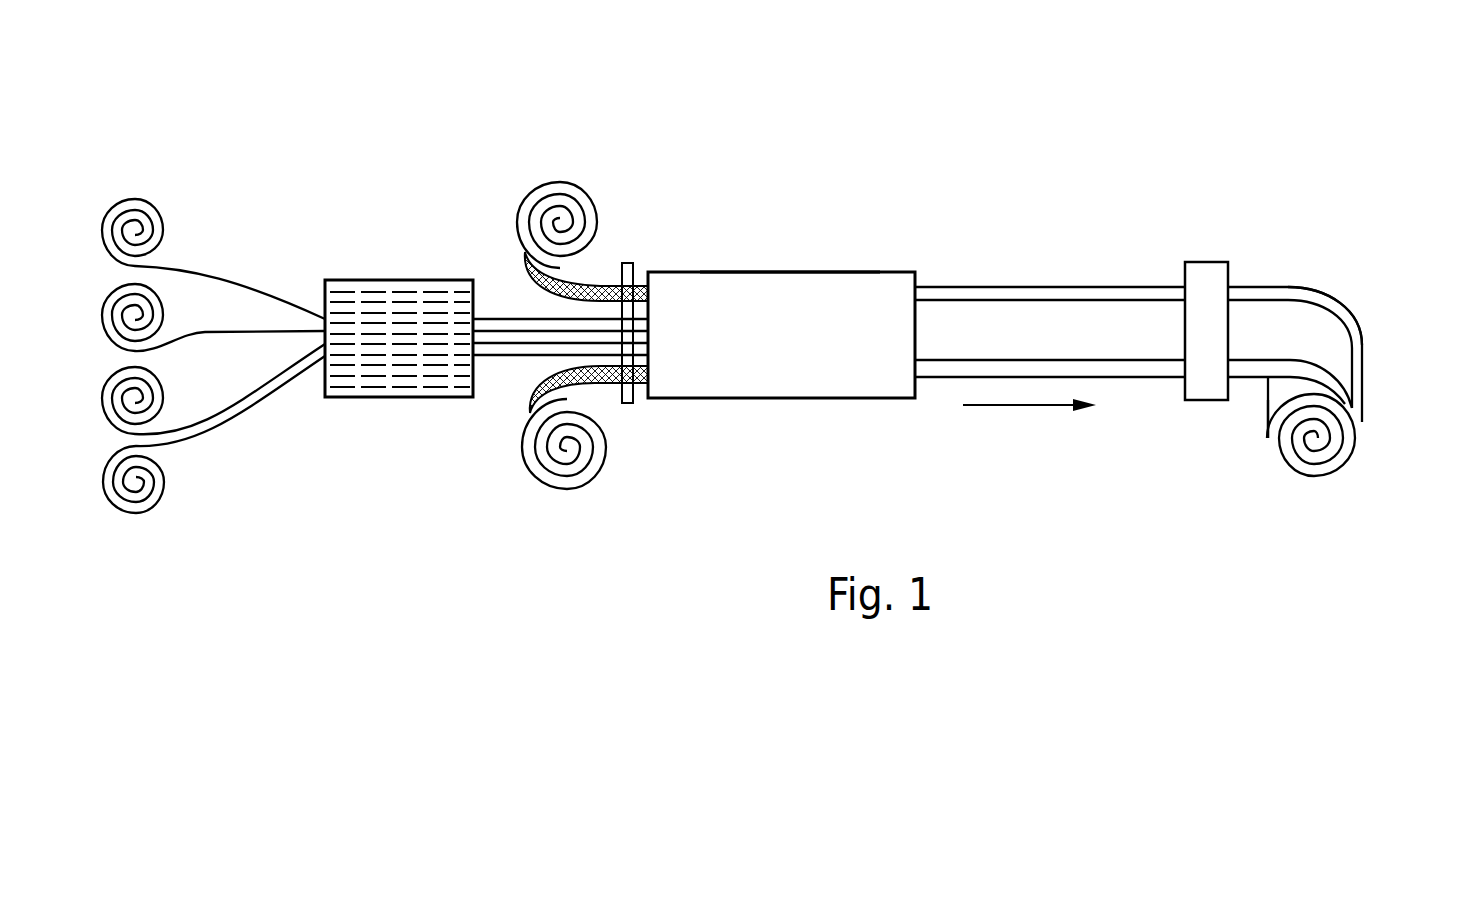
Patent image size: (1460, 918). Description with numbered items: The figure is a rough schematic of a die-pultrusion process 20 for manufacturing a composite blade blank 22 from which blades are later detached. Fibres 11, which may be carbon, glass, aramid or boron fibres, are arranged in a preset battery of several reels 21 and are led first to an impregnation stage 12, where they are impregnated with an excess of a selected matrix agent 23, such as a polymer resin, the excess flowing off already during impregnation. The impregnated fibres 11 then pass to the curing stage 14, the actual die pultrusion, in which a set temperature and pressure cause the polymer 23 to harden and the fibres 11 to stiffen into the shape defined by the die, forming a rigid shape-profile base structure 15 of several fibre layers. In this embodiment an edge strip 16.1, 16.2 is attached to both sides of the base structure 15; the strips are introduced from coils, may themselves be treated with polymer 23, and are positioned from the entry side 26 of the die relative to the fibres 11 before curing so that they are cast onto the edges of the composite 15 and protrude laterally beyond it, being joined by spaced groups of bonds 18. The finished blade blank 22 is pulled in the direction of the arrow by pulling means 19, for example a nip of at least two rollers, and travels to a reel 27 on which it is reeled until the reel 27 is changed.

The pultrusion process 20 is at (862, 95).
The reels 21 is at (145, 180).
The fibres 11 is at (268, 390).
The impregnation stage 12 is at (388, 275).
The matrix agent 23 is at (383, 368).
The groups of bonds 18 is at (593, 272).
The entry side of the die 26 is at (637, 255).
The curing stage 14 is at (748, 420).
The blade blank 22 is at (1018, 265).
The pulling means 19 is at (1207, 250).
The base structure 15 is at (1350, 368).
The edge strip 16.1 is at (1318, 290).
The edge strip 16.2 is at (1307, 486).
The reel 27 is at (1258, 449).